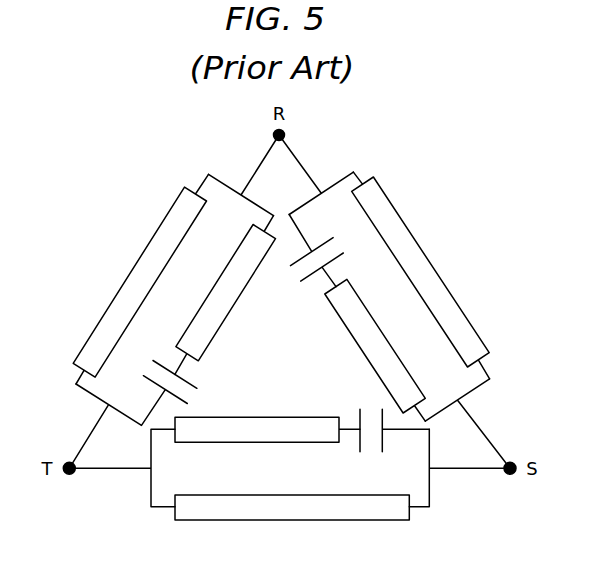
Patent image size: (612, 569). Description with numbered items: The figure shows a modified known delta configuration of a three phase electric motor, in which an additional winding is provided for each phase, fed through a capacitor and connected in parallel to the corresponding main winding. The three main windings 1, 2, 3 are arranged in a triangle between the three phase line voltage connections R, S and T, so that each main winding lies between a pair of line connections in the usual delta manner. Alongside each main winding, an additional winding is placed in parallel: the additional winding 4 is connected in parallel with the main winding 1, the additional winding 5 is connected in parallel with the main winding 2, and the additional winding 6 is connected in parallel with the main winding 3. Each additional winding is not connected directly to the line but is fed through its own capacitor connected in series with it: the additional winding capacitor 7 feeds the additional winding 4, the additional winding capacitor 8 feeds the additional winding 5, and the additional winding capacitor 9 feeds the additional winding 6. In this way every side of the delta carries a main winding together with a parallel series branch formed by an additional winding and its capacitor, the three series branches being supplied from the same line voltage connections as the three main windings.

The main winding 1 is at (140, 279).
The main winding 2 is at (421, 275).
The main winding 3 is at (292, 523).
The additional winding 4 is at (225, 295).
The additional winding 5 is at (373, 350).
The additional winding 6 is at (267, 416).
The additional winding capacitor 7 is at (158, 387).
The additional winding capacitor 8 is at (329, 251).
The additional winding capacitor 9 is at (393, 446).